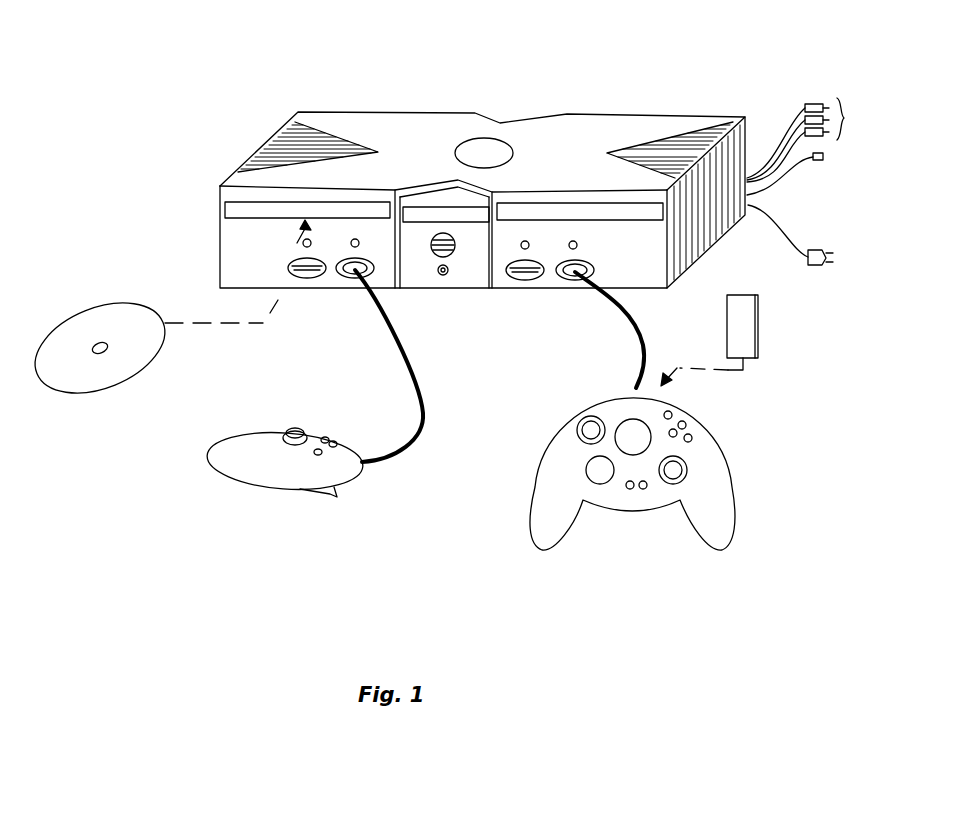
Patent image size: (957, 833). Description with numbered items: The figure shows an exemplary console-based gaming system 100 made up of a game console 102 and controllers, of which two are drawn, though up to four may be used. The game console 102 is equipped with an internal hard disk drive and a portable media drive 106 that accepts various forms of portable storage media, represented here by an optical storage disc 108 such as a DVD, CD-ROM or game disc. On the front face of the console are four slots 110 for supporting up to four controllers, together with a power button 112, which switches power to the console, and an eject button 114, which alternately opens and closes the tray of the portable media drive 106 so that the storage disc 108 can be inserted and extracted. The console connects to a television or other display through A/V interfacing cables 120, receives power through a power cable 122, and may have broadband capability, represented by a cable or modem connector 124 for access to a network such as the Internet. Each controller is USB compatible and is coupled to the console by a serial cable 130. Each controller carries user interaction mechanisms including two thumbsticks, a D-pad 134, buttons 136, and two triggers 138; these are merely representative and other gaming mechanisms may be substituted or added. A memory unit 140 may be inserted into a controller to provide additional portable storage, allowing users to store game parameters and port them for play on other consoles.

The gaming system 100 is at (633, 35).
The game console 102 is at (338, 112).
The portable media drive 106 is at (235, 207).
The optical storage disc 108 is at (110, 387).
The slots 110 is at (350, 277).
The power button 112 is at (443, 276).
The eject button 114 is at (443, 233).
The A/V interfacing cables 120 is at (815, 103).
The power cable 122 is at (810, 260).
The cable or modem connector 124 is at (788, 183).
The serial cables 130 is at (419, 376).
The D-pad 134 is at (586, 470).
The buttons 136 is at (686, 426).
The triggers 138 is at (335, 491).
The memory unit 140 is at (760, 323).